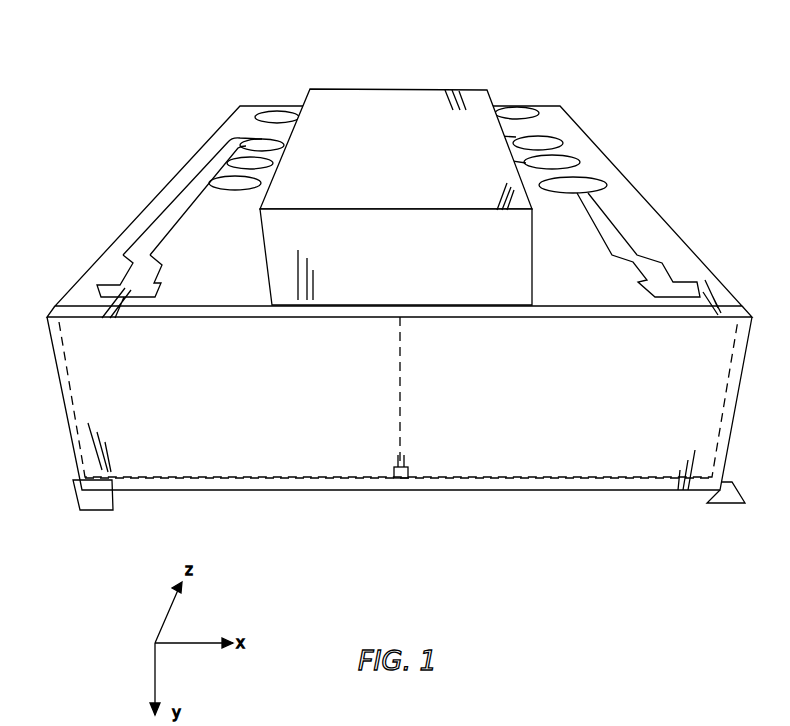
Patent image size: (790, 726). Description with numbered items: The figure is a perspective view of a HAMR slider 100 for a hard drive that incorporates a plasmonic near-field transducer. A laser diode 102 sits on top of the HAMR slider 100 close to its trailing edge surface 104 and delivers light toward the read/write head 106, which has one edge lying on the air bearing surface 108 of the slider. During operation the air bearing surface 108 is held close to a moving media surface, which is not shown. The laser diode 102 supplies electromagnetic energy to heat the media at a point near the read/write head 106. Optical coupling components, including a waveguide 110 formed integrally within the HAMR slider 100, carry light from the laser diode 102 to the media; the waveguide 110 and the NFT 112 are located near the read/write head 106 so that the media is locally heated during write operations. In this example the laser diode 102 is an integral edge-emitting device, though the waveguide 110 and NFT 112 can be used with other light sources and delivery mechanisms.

The HAMR slider 100 is at (568, 58).
The laser diode 102 is at (327, 89).
The trailing edge surface 104 is at (98, 511).
The read/write head 106 is at (405, 479).
The air bearing surface 108 is at (735, 504).
The waveguide 110 is at (402, 382).
The near-field transducer (NFT) 112 is at (400, 480).